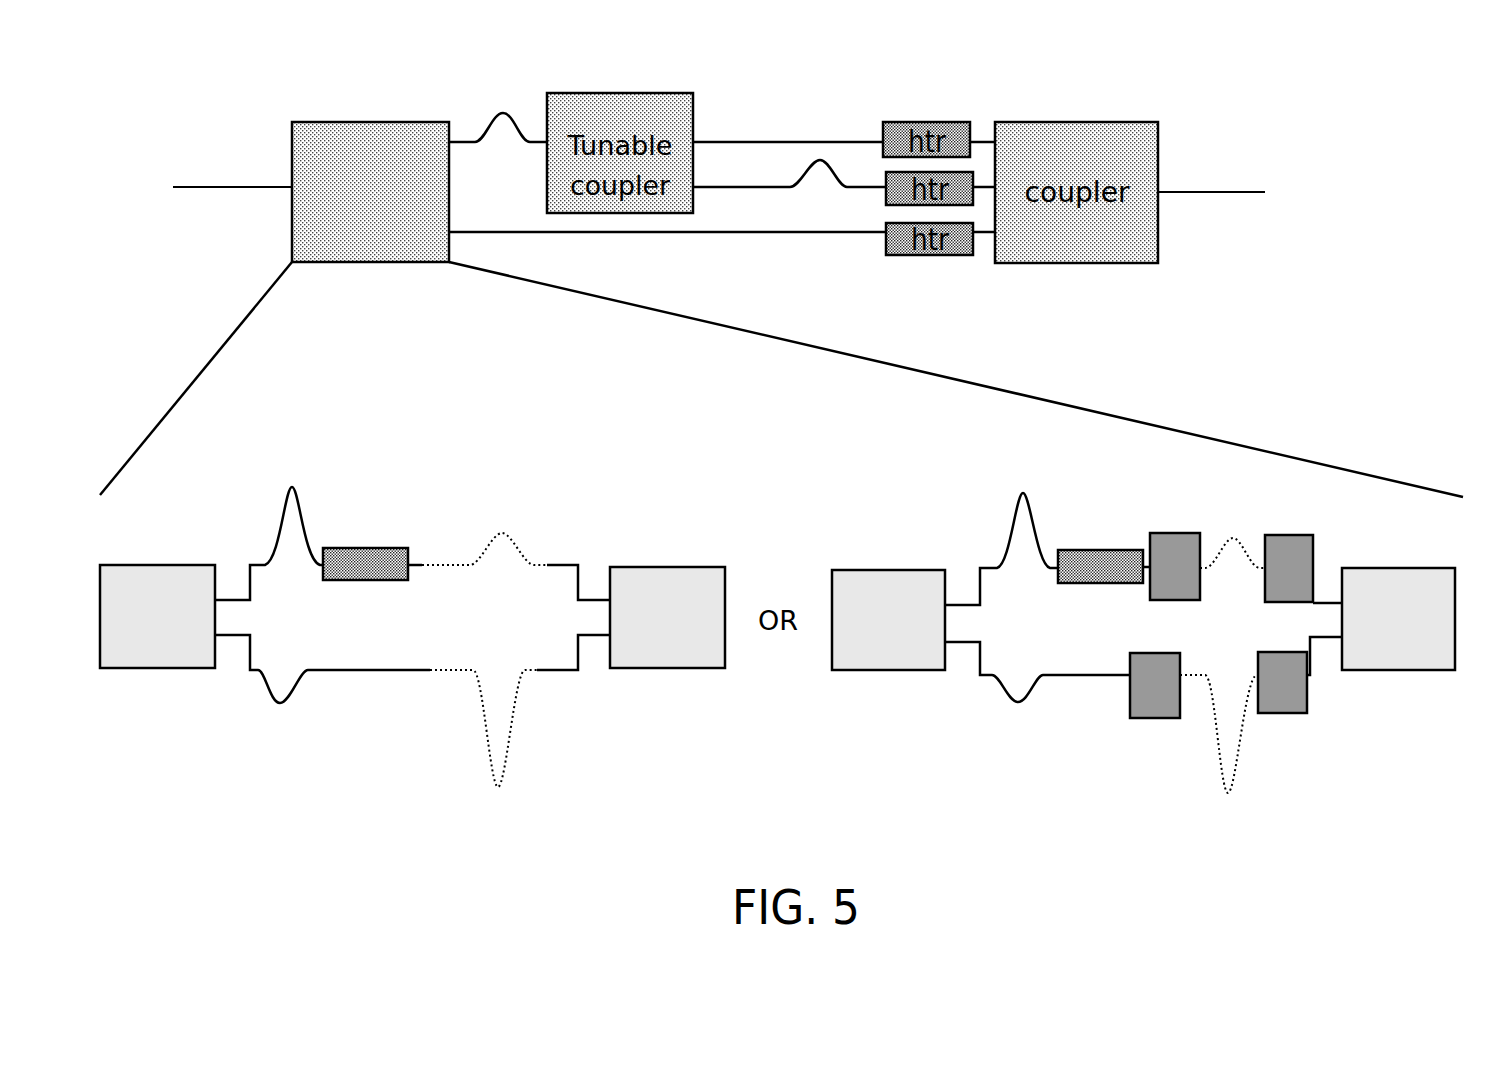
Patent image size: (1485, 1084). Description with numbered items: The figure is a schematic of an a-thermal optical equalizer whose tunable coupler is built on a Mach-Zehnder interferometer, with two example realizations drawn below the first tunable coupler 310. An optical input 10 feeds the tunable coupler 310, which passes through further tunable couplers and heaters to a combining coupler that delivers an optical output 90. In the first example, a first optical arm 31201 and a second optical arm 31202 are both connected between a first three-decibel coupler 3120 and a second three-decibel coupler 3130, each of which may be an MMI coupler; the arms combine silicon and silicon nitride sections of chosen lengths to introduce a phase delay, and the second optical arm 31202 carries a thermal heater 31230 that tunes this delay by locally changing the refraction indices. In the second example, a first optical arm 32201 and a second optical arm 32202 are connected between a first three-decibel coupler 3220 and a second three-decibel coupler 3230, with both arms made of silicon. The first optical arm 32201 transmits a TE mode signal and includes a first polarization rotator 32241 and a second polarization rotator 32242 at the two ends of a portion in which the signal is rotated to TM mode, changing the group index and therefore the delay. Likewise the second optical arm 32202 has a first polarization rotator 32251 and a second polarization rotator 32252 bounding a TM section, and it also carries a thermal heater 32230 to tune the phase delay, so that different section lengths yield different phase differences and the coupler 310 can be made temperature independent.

The optical input 10 is at (196, 187).
The optical output 90 is at (1200, 192).
The first tunable coupler 310 is at (360, 122).
The first 3 dB coupler 3120 is at (148, 565).
The second 3 dB coupler 3130 is at (645, 567).
The first optical arm 31201 is at (340, 716).
The second optical arm 31202 is at (412, 538).
The thermal heater 31230 is at (337, 582).
The first 3 dB coupler 3220 is at (875, 570).
The second 3 dB coupler 3230 is at (1380, 568).
The first optical arm 32201 is at (1143, 741).
The second optical arm 32202 is at (1158, 545).
The thermal heater 32230 is at (1072, 582).
The first polarization rotator 32241 is at (1157, 710).
The second polarization rotator 32242 is at (1302, 710).
The first polarization rotator 32251 is at (1168, 590).
The second polarization rotator 32252 is at (1322, 523).